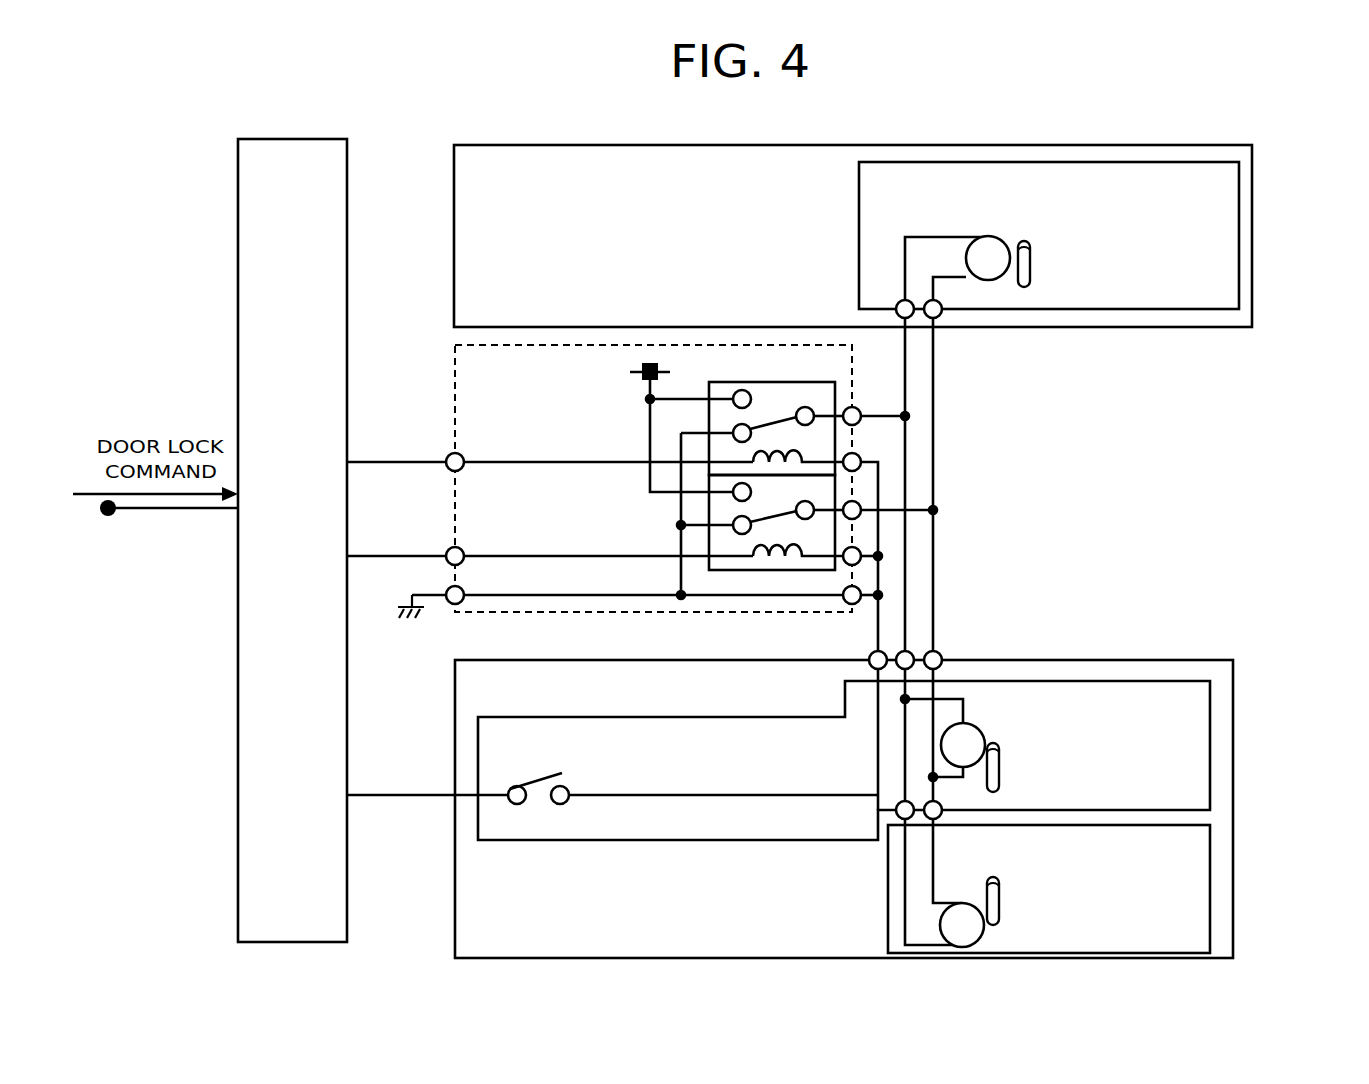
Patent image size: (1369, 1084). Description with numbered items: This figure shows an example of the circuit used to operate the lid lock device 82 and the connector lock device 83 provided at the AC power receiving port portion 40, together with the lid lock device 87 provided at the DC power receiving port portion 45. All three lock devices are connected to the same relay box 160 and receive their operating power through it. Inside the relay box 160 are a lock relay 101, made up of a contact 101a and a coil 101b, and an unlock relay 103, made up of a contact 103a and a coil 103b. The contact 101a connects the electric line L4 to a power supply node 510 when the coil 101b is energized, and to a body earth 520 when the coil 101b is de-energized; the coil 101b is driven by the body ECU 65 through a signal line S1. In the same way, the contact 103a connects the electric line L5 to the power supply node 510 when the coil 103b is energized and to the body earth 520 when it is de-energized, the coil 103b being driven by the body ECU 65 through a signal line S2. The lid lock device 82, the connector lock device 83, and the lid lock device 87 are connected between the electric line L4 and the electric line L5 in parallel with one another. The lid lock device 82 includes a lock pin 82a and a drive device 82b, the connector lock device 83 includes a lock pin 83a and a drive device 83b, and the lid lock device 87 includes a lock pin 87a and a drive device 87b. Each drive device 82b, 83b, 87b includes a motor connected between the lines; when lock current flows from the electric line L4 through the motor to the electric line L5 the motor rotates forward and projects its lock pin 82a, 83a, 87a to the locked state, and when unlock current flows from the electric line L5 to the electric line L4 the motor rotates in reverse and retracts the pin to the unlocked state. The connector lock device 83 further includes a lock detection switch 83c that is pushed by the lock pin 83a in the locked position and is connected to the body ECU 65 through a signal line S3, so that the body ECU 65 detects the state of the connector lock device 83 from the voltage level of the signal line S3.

The body ECU 65 is at (305, 137).
The power receiving port portion 45 is at (1022, 145).
The lid lock device 87 is at (1239, 236).
The lock pin 87a is at (1032, 265).
The drive device 87b is at (990, 238).
The relay box 160 is at (452, 363).
The power supply node 510 is at (640, 370).
The lock relay 101 is at (735, 380).
The contact 101a is at (782, 402).
The coil 101b is at (780, 450).
The unlock relay 103 is at (737, 571).
The contact 103a is at (782, 497).
The coil 103b is at (780, 542).
The electric line L4 is at (905, 360).
The electric line L5 is at (933, 598).
The body earth 520 is at (408, 622).
The signal line S1 is at (507, 465).
The signal line S2 is at (600, 552).
The signal line S3 is at (402, 790).
The power receiving port portion 40 is at (1185, 660).
The connector lock device 83 is at (1210, 745).
The lock pin 83a is at (1000, 765).
The drive device 83b is at (975, 725).
The lock detection switch 83c is at (542, 772).
The lid lock device 82 is at (1210, 895).
The lock pin 82a is at (1000, 905).
The drive device 82b is at (972, 900).